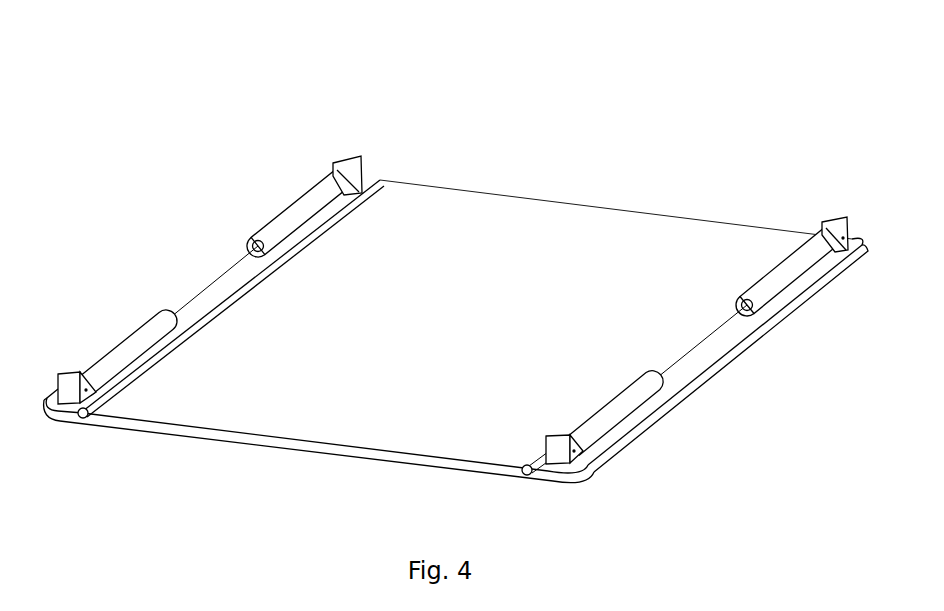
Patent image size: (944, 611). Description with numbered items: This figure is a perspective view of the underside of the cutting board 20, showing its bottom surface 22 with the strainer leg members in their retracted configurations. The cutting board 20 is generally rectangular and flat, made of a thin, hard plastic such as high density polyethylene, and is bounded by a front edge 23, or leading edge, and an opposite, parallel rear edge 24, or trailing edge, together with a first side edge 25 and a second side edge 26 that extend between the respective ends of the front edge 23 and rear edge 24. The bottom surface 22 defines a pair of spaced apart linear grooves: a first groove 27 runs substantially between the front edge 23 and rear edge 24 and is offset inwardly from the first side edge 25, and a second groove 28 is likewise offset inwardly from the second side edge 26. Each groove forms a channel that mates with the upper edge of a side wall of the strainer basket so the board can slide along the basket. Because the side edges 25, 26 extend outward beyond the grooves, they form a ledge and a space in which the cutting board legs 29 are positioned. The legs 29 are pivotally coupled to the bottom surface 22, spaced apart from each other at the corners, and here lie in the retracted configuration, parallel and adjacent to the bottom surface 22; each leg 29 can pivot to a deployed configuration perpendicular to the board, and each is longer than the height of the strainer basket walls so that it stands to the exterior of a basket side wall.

The cutting board 20 is at (545, 105).
The bottom surface 22 is at (446, 322).
The front edge 23 is at (637, 213).
The rear edge 24 is at (279, 443).
The first side edge 25 is at (703, 381).
The second side edge 26 is at (197, 283).
The first groove 27 is at (677, 348).
The second groove 28 is at (227, 300).
The cutting board legs 29 is at (287, 222).